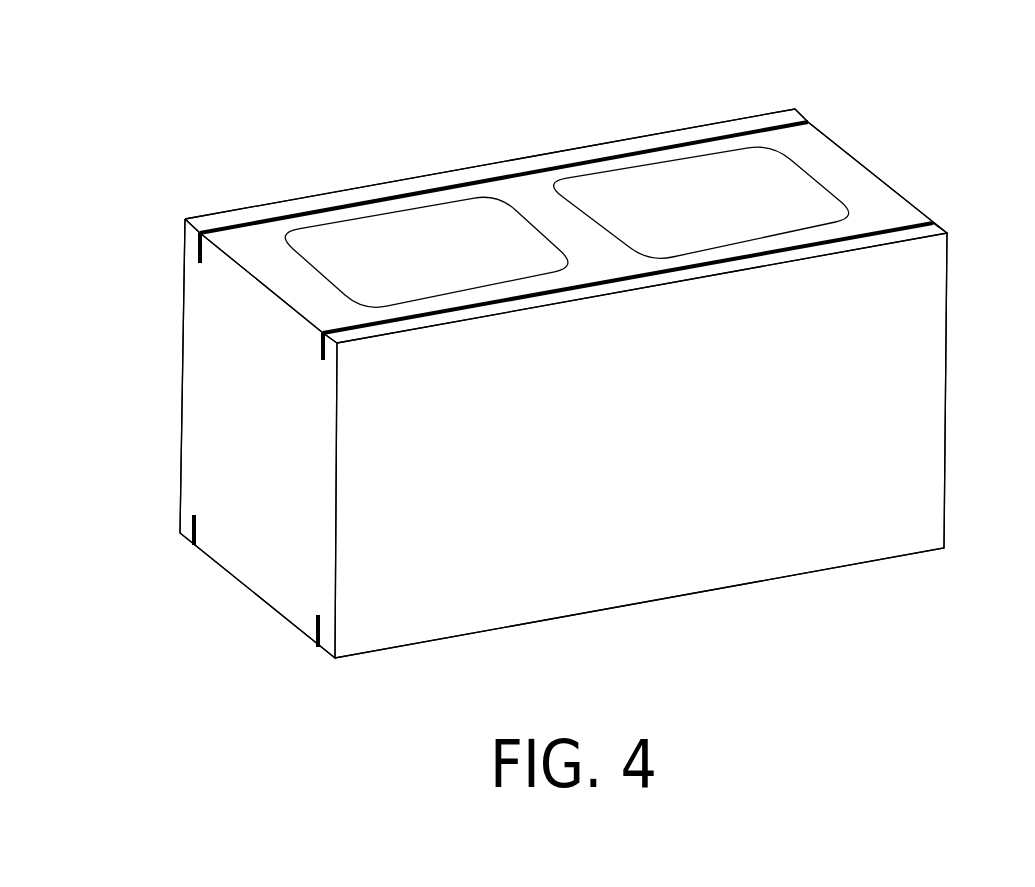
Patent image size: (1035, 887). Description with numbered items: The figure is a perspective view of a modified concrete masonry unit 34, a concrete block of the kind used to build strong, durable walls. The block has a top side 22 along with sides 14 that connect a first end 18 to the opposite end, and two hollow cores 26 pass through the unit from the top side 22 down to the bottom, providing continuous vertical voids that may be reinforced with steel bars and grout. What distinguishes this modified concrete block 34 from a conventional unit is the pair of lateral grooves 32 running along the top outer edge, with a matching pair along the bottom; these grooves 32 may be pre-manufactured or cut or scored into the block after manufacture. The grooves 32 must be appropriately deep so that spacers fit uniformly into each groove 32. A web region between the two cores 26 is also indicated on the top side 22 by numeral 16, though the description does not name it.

The sides 14 is at (670, 445).
The top face 16 is at (566, 189).
The first end 18 is at (209, 438).
The top side 22 is at (494, 196).
The cores 26 is at (566, 172).
The lateral grooves 32 is at (499, 378).
The modified concrete masonry unit 34 is at (513, 358).